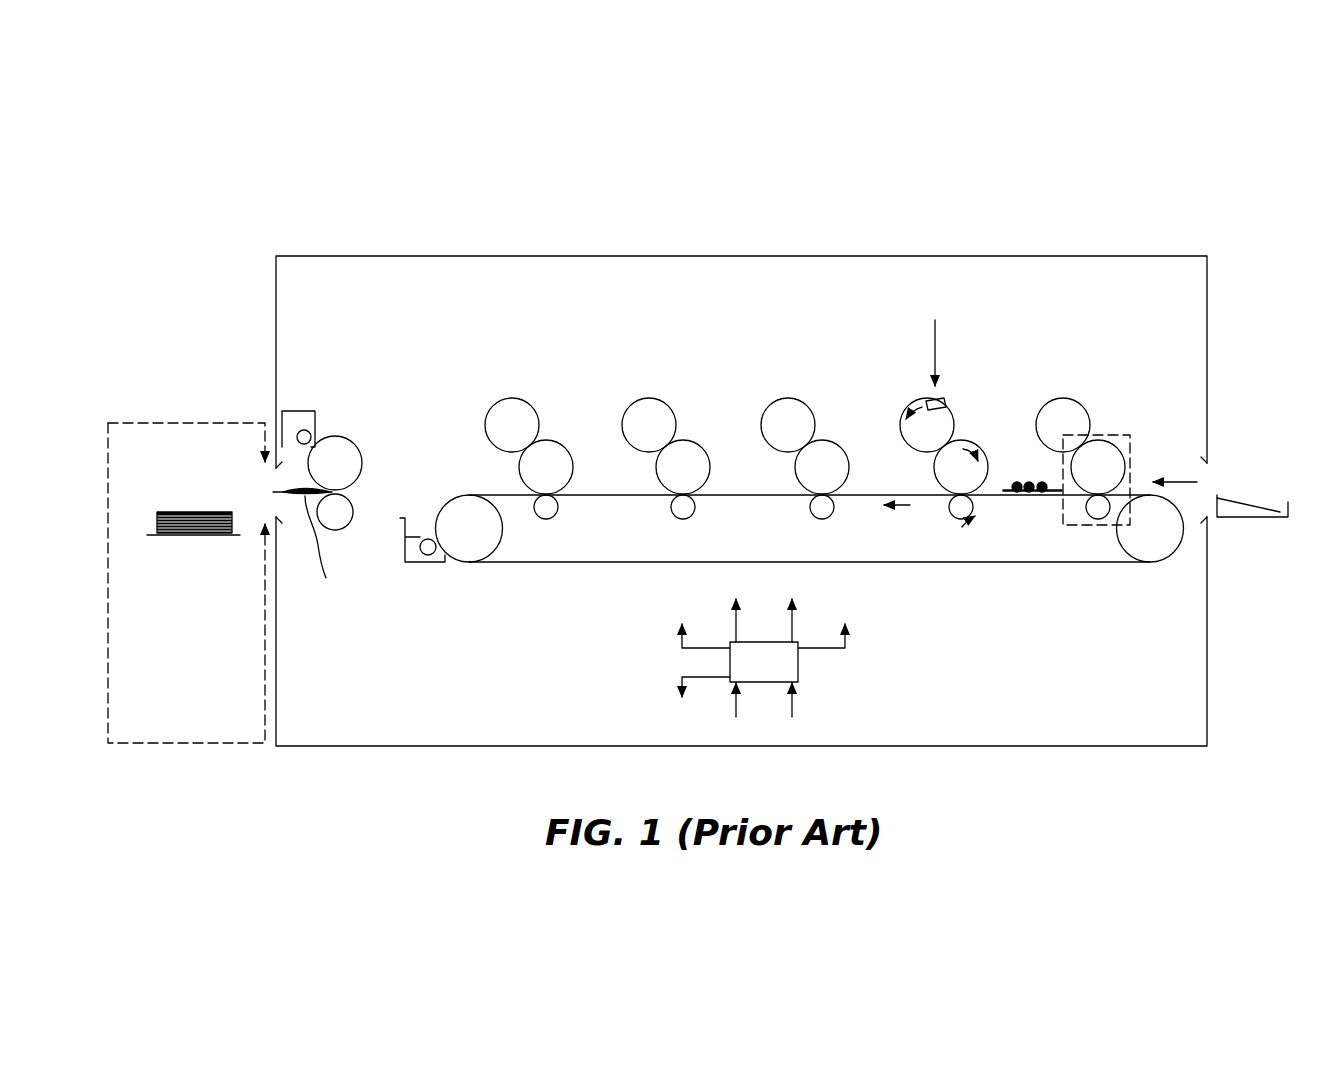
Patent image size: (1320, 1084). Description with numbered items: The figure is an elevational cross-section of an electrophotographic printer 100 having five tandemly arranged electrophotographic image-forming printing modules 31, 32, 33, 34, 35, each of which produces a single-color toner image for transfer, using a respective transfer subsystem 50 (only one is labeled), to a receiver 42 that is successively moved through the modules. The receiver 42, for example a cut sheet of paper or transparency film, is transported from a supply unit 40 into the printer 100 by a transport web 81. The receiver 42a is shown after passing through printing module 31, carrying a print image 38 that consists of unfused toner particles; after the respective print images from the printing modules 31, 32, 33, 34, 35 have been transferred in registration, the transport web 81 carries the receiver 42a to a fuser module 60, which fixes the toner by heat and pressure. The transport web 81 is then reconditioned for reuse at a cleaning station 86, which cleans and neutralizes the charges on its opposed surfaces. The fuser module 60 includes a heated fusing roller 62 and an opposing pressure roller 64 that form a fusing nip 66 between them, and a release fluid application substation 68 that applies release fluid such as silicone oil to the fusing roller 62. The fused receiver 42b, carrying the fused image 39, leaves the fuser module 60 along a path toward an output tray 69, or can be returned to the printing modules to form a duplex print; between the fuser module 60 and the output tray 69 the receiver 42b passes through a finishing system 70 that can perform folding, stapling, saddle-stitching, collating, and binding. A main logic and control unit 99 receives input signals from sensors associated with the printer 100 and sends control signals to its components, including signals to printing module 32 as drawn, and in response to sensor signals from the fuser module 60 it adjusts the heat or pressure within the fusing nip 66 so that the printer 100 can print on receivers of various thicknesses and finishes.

The electrophotographic printer 100 is at (963, 217).
The finishing system 70 is at (186, 548).
The output tray 69 is at (202, 537).
The release fluid application substation 68 is at (292, 410).
The fuser module 60 is at (371, 462).
The fusing roller 62 is at (363, 457).
The pressure roller 64 is at (336, 530).
The fusing nip 66 is at (368, 490).
The receiver 42b is at (283, 496).
The fused image 39 is at (323, 549).
The cleaning station 86 is at (427, 563).
The printing module 35 is at (493, 392).
The printing module 34 is at (634, 392).
The printing module 33 is at (775, 393).
The printing module 32 is at (917, 393).
The printing module 31 is at (1055, 393).
The print image 38 is at (1027, 482).
The receiver 42a is at (1027, 493).
The transfer subsystem 50 is at (1098, 525).
The transport web 81 is at (1005, 563).
The receiver 42 is at (1248, 507).
The supply unit 40 is at (1256, 524).
The logic and control unit 99 is at (799, 662).